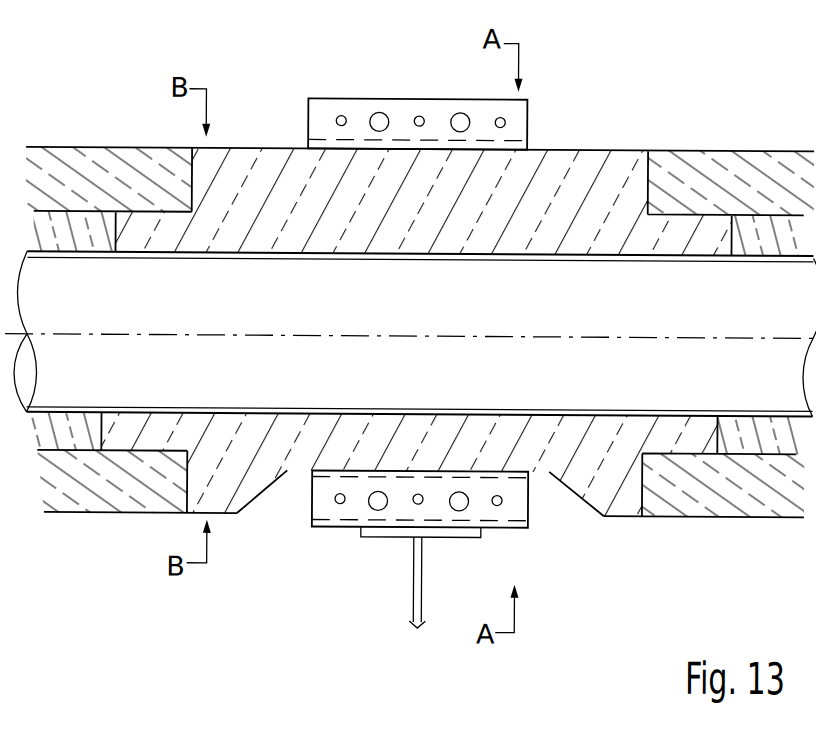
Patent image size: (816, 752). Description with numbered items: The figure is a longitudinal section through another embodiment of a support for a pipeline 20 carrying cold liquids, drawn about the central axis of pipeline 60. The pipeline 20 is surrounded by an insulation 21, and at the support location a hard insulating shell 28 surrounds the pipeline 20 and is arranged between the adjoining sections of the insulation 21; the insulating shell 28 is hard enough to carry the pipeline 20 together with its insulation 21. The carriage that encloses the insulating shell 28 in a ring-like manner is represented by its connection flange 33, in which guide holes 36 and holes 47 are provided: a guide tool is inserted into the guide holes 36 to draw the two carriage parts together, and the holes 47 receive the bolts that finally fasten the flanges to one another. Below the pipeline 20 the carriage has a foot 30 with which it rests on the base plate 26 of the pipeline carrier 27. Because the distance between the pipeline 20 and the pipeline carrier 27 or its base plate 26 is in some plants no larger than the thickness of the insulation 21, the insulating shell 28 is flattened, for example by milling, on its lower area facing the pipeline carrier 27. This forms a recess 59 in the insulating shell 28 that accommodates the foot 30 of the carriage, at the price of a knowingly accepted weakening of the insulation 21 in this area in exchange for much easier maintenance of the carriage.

The pipeline 20 is at (382, 408).
The insulation 21 is at (115, 148).
The base plate 26 is at (452, 537).
The pipeline carrier 27 is at (413, 603).
The insulating shell 28 is at (228, 148).
The foot 30 is at (296, 516).
The connection flange 33 is at (525, 140).
The guide hole 36 is at (378, 112).
The hole 47 is at (340, 116).
The recess 59 is at (573, 503).
The central axis of pipeline 60 is at (536, 334).